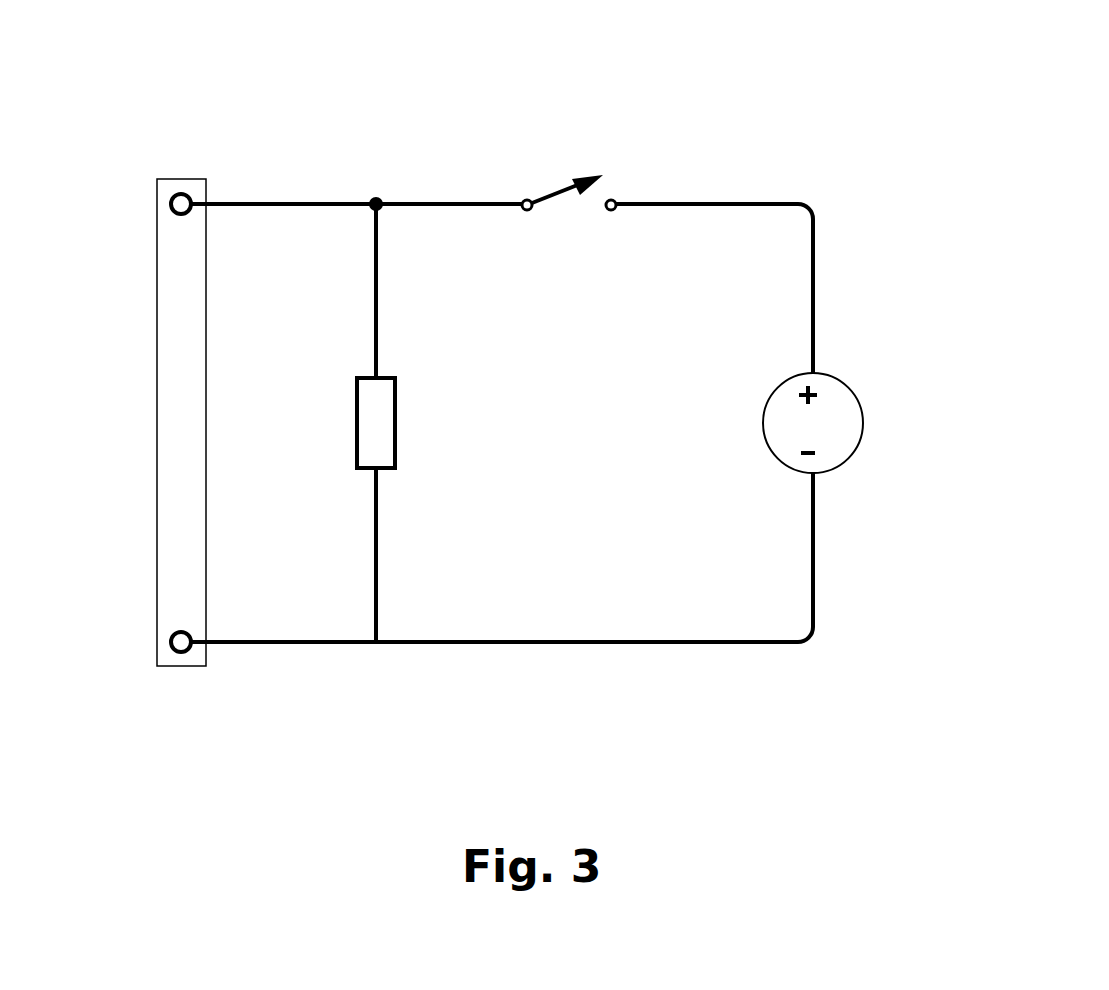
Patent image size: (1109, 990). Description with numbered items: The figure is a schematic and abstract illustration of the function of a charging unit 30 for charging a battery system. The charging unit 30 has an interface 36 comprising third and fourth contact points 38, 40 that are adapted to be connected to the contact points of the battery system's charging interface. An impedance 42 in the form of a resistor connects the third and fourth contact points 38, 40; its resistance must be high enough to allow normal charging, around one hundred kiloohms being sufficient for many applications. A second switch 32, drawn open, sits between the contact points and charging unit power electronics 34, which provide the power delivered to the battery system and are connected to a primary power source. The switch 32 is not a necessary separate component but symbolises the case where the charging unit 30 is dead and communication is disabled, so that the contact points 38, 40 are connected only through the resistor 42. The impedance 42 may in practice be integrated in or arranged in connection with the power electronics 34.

The charging unit 30 is at (788, 36).
The second switch 32 is at (587, 158).
The charging unit power electronics 34 is at (653, 423).
The interface 36 is at (138, 422).
The third contact point 38 is at (223, 667).
The fourth contact point 40 is at (223, 187).
The impedance 42 is at (412, 419).